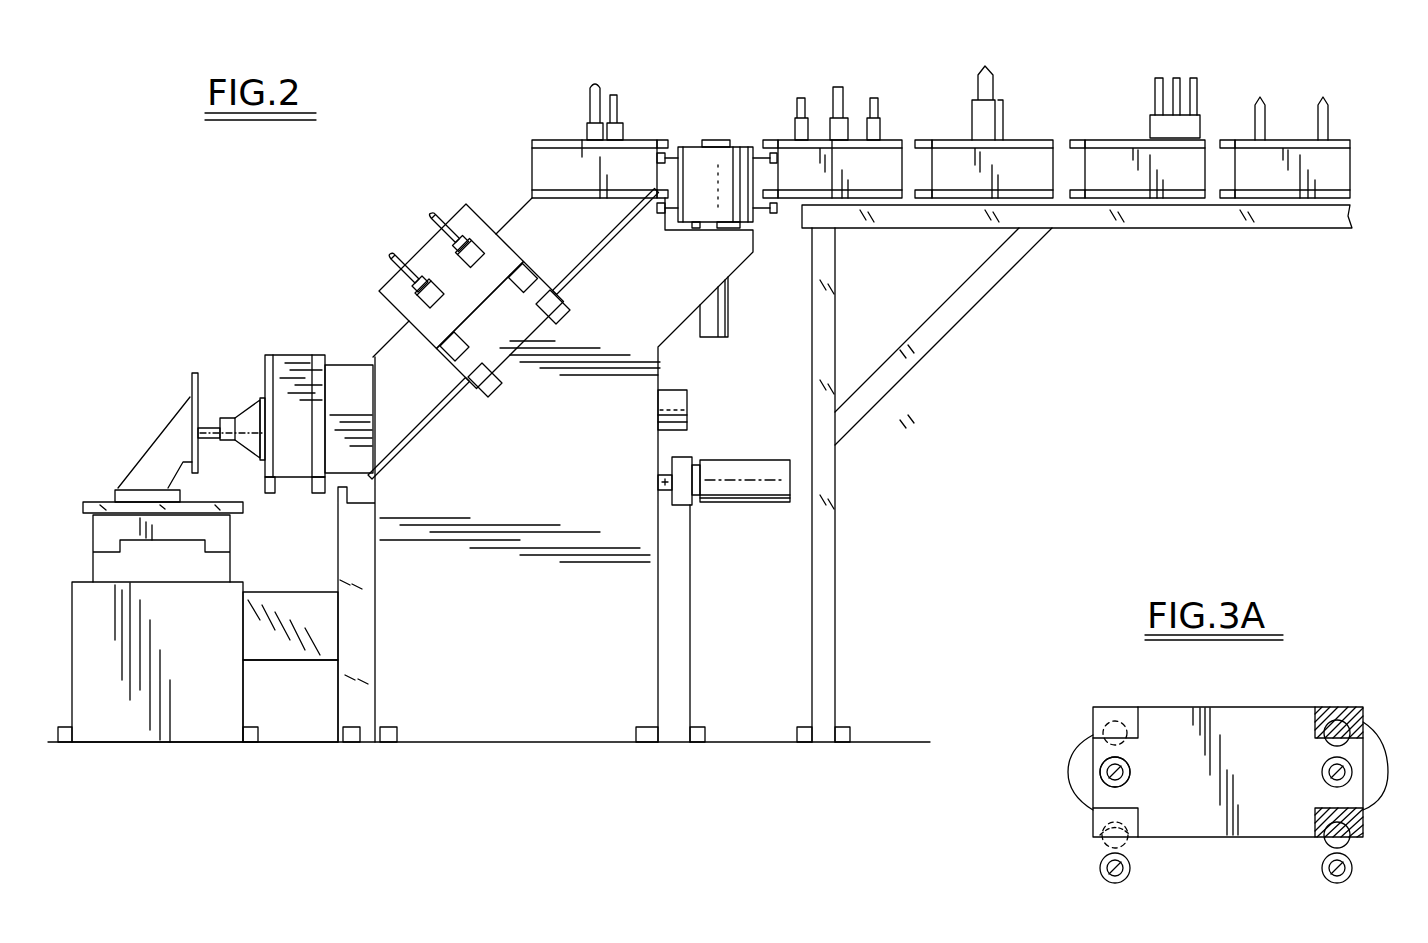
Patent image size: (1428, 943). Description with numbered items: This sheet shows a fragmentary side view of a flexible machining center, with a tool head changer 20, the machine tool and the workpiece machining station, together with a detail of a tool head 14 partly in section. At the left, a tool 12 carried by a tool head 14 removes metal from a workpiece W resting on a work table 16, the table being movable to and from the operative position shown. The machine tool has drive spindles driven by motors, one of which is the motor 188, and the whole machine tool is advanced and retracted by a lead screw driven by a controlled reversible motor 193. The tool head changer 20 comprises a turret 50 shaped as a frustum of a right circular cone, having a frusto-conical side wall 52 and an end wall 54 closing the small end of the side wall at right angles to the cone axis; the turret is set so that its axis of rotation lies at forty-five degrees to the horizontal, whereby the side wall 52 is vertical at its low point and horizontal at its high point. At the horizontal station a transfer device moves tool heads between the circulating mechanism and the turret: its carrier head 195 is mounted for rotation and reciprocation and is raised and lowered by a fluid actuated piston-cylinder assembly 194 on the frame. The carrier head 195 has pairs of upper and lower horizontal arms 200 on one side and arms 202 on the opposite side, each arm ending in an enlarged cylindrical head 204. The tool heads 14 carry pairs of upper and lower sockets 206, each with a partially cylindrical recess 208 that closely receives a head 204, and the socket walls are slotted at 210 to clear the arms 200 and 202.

In FIG. 2, the tool 12 is at (225, 418).
In FIG. 2, the tool head 14 is at (292, 353).
In FIG. 3A, the tool head 14 is at (1314, 698).
In FIG. 2, the work table 16 is at (93, 538).
In FIG. 2, the tool head changer 20 is at (382, 334).
In FIG. 2, the turret 50 is at (445, 382).
In FIG. 2, the frusto-conical side wall 52 is at (402, 428).
In FIG. 2, the end wall 54 is at (509, 215).
In FIG. 2, the motor 188 is at (688, 403).
In FIG. 2, the controlled reversible motor 193 is at (753, 460).
In FIG. 2, the fluid actuated piston-cylinder assembly 194 is at (728, 303).
In FIG. 2, the carrier head 195 is at (710, 140).
In FIG. 2, the horizontal arms 200 is at (675, 152).
In FIG. 3A, the horizontal arms 200 is at (1132, 775).
In FIG. 2, the horizontal arms 202 is at (758, 153).
In FIG. 3A, the enlarged cylindrical head 204 is at (1325, 745).
In FIG. 3A, the sockets 206 is at (1219, 766).
In FIG. 3A, the partially cylindrical recess 208 is at (1108, 722).
In FIG. 3A, the slot 210 is at (1105, 835).
In FIG. 2, the workpiece W is at (165, 417).